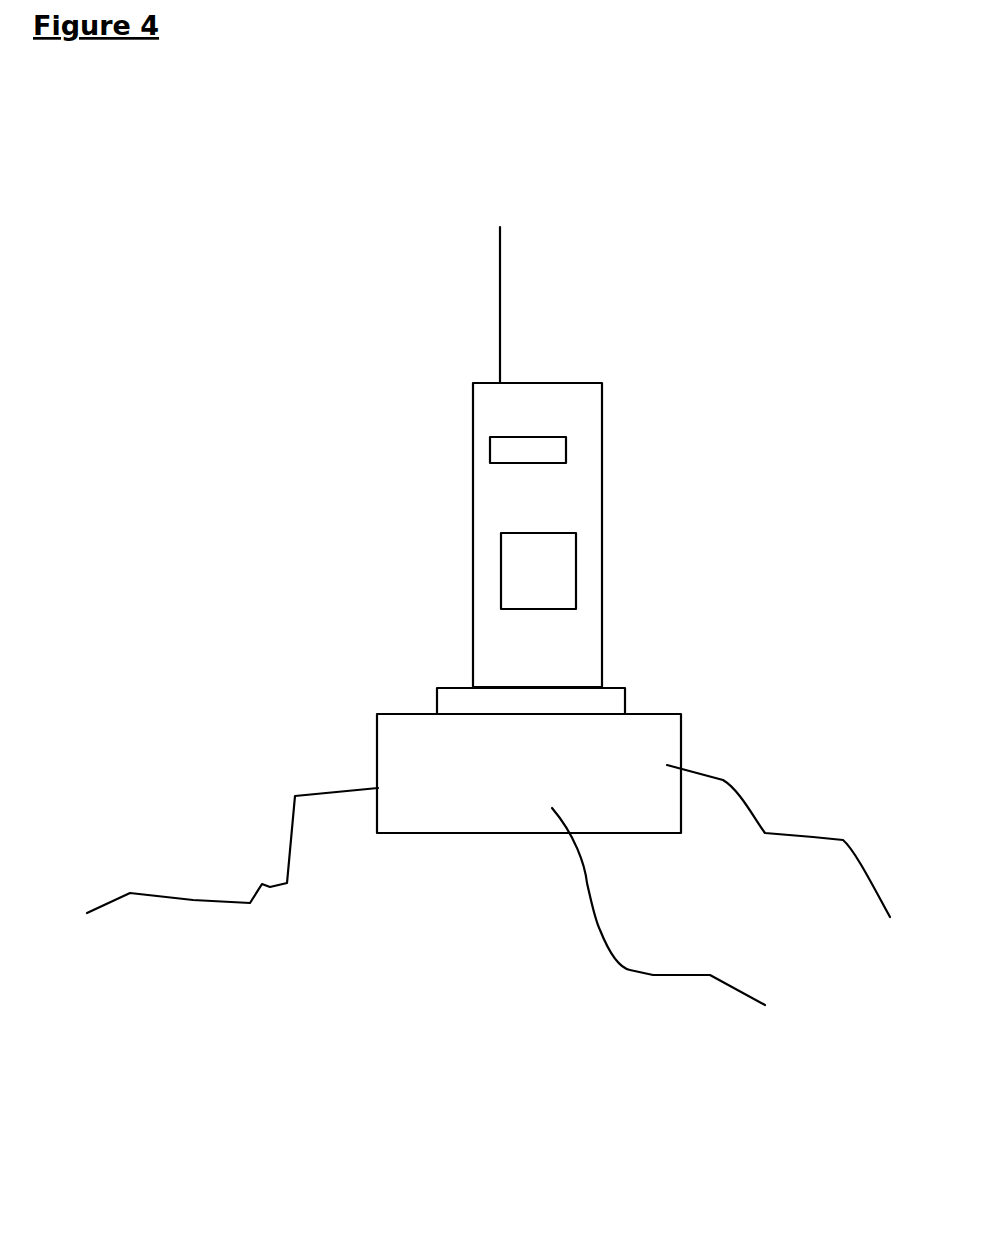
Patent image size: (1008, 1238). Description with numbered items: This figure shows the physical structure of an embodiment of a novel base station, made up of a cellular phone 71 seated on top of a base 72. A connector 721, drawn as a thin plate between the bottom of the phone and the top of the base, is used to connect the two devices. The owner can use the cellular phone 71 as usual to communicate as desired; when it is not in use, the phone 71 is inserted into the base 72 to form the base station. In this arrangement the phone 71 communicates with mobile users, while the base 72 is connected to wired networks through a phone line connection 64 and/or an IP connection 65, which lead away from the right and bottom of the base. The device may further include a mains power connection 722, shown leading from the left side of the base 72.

The cellular phone 71 is at (602, 480).
The connector 721 is at (633, 693).
The base 72 is at (393, 713).
The phone line connection 64 is at (813, 835).
The IP connection 65 is at (653, 975).
The mains power connection 722 is at (193, 900).